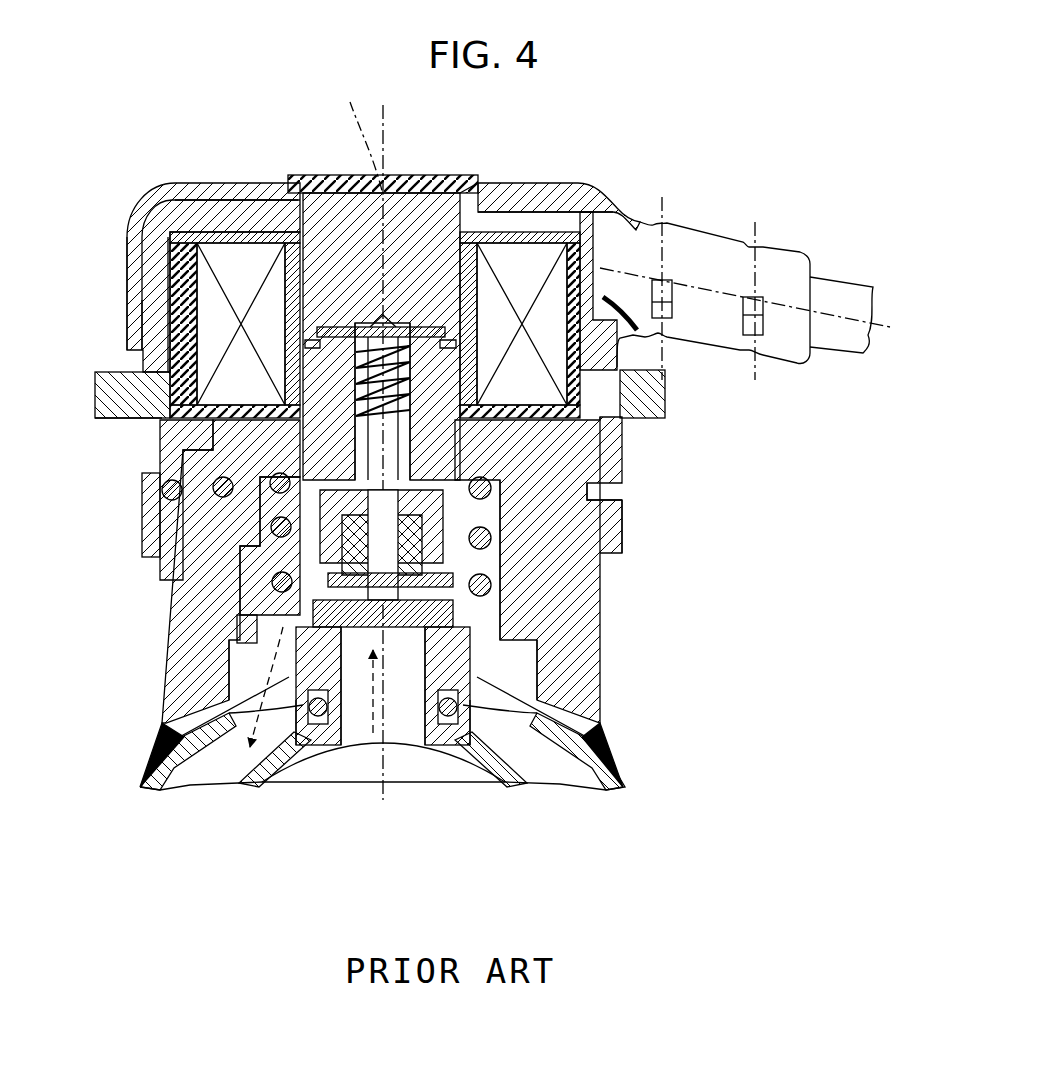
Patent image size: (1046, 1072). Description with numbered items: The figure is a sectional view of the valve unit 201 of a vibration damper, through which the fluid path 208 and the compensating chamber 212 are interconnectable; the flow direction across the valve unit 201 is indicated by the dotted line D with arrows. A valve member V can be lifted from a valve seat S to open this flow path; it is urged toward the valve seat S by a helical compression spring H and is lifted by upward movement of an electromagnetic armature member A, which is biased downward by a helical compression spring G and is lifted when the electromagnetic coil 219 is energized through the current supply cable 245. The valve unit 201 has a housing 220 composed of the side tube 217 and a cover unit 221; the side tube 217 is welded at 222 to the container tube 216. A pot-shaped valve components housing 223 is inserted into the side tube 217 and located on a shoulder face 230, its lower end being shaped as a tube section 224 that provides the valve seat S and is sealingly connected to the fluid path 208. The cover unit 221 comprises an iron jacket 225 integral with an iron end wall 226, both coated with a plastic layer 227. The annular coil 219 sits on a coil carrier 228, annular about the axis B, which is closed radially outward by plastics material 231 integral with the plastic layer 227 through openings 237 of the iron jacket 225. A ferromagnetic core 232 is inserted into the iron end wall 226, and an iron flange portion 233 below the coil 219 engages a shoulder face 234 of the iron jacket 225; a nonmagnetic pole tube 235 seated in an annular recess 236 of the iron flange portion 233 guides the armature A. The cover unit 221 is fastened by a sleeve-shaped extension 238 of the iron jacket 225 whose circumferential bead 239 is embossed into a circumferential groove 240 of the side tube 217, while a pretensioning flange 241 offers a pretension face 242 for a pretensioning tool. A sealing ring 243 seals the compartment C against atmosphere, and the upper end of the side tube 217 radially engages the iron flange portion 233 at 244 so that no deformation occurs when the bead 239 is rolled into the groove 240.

The valve unit 201 is at (716, 208).
The fluid path 208 is at (350, 763).
The compensating chamber 212 is at (547, 763).
The container tube 216 is at (620, 778).
The side tube 217 is at (580, 650).
The electromagnetic coil 219 is at (290, 195).
The housing 220 is at (645, 528).
The cover unit 221 is at (260, 172).
The weld 222 is at (598, 750).
The valve components housing 223 is at (220, 517).
The tube section 224 is at (428, 700).
The iron jacket 225 is at (127, 310).
The iron end wall 226 is at (174, 183).
The plastic layer 227 is at (133, 280).
The coil carrier 228 is at (232, 200).
The shoulder face 230 is at (200, 575).
The plastics material 231 is at (147, 320).
The ferromagnetic core 232 is at (416, 217).
The iron flange portion 233 is at (162, 490).
The shoulder face 234 is at (197, 433).
The pole tube 235 is at (281, 350).
The annular recess 236 is at (530, 320).
The openings 237 is at (127, 237).
The sleeve-shaped extension 238 is at (610, 450).
The circumferential bead 239 is at (612, 492).
The circumferential groove 240 is at (152, 520).
The pretensioning flange 241 is at (108, 405).
The pretension face 242 is at (112, 370).
The sealing ring 243 is at (228, 418).
The radial engagement 244 is at (547, 412).
The current supply cable 245 is at (840, 292).
The armature member A is at (505, 212).
The axis B is at (343, 96).
The compartment C is at (230, 663).
The flow path D is at (263, 777).
The helical compression spring G is at (470, 186).
The helical compression spring H is at (523, 557).
The valve seat S is at (545, 650).
The valve member V is at (385, 720).